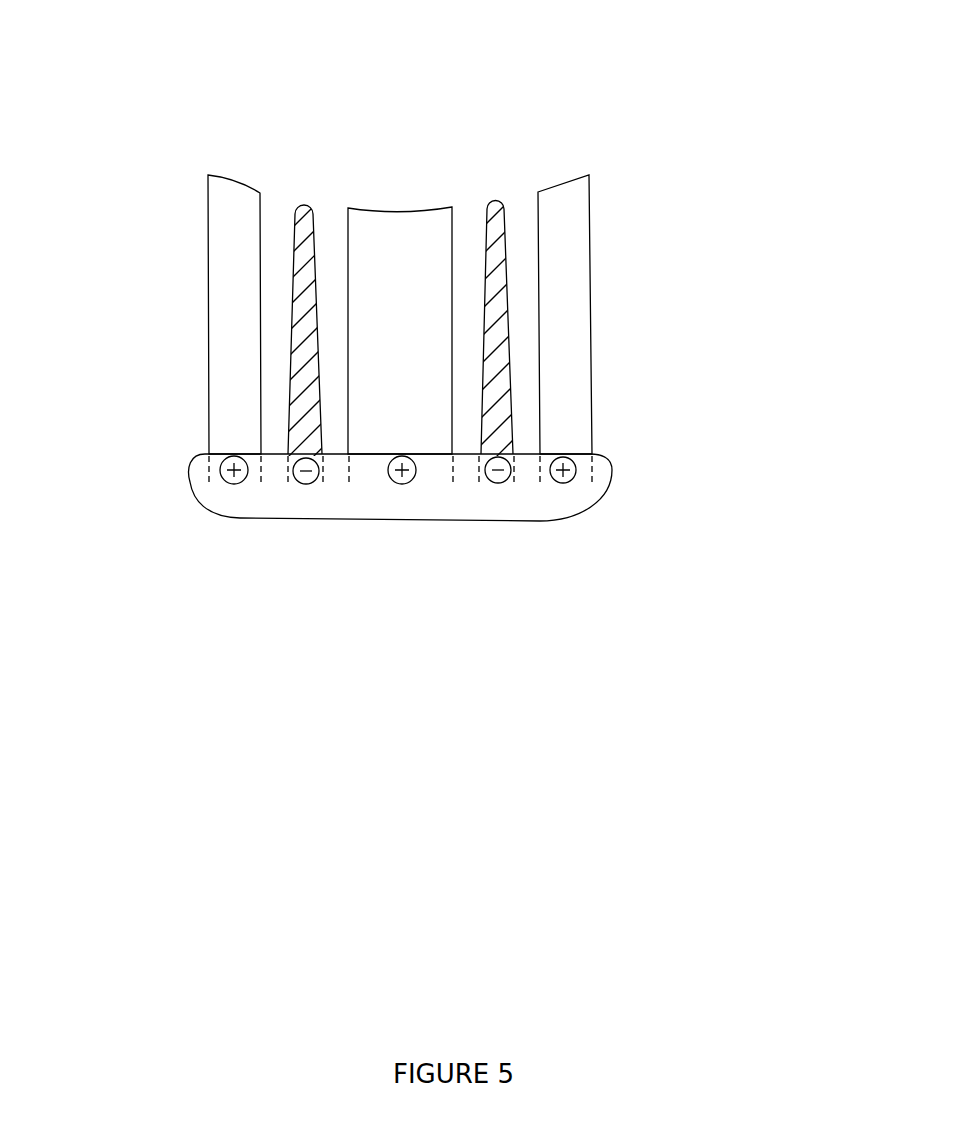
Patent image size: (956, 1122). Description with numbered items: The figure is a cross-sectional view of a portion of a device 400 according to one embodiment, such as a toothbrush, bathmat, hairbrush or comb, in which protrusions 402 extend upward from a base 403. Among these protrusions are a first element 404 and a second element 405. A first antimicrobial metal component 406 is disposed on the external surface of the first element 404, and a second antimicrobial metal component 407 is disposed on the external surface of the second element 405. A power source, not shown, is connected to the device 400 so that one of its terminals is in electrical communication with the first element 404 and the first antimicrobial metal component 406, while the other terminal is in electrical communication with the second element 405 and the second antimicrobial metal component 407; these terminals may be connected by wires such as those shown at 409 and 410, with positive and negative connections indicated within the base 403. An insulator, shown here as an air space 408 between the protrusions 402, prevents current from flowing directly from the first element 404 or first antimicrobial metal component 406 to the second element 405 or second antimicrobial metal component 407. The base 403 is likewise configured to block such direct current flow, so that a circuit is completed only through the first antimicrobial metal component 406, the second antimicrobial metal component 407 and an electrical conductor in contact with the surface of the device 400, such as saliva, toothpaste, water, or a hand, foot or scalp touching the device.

The device 400 is at (471, 500).
The protrusions 402 is at (423, 207).
The base 403 is at (193, 489).
The first element 404 is at (492, 378).
The second element 405 is at (560, 378).
The first antimicrobial metal component 406 is at (508, 290).
The second antimicrobial metal component 407 is at (595, 338).
The insulator 408 is at (527, 430).
The wire 409 is at (498, 483).
The wire 410 is at (573, 478).